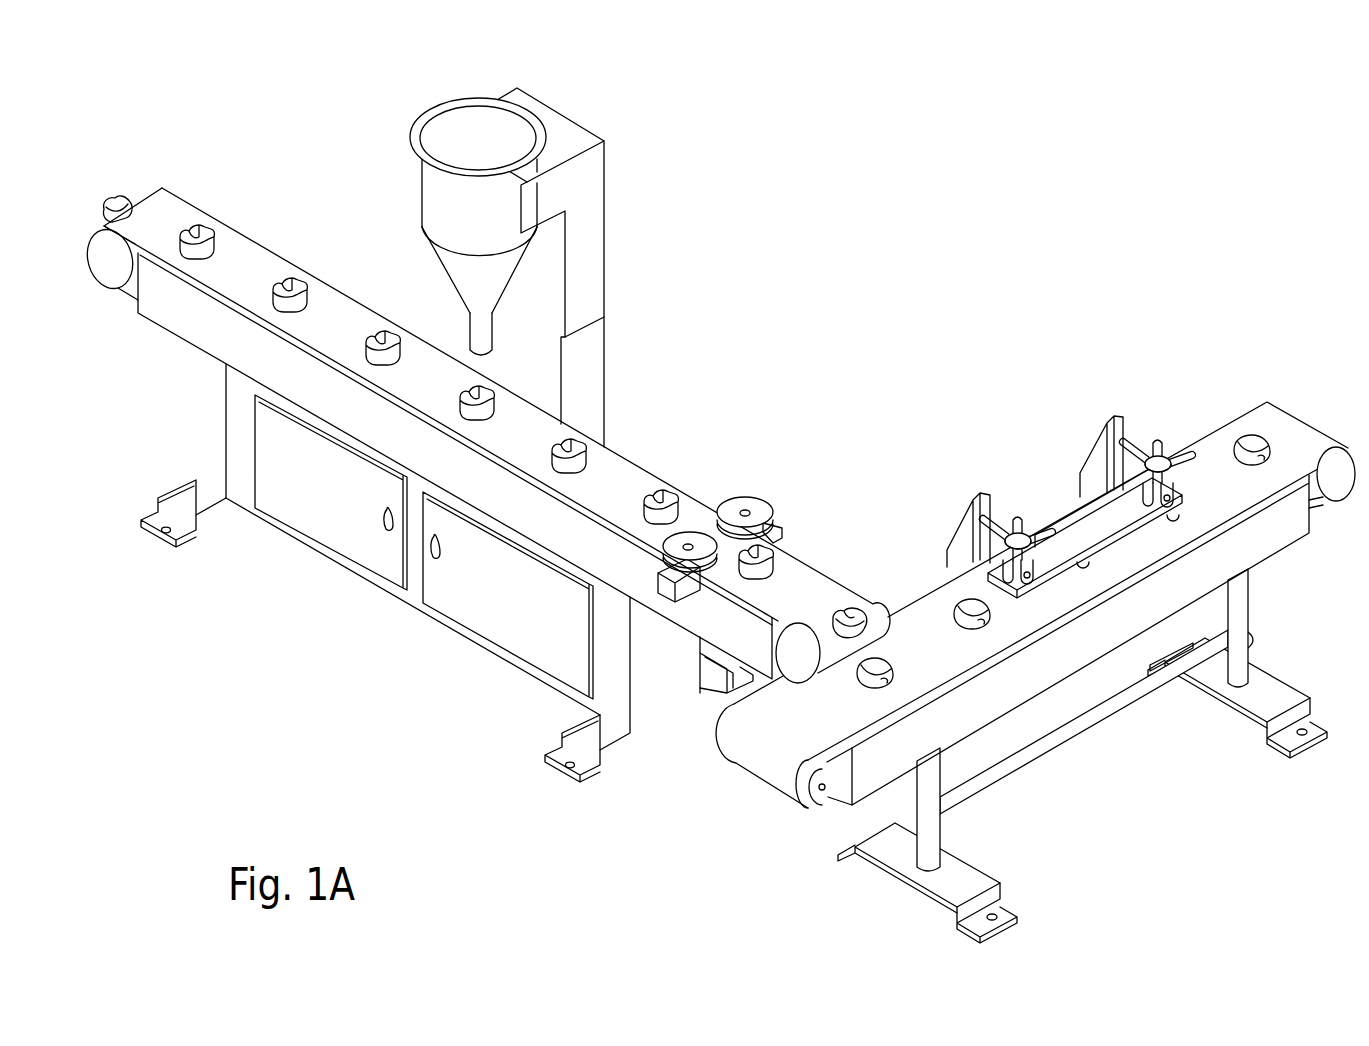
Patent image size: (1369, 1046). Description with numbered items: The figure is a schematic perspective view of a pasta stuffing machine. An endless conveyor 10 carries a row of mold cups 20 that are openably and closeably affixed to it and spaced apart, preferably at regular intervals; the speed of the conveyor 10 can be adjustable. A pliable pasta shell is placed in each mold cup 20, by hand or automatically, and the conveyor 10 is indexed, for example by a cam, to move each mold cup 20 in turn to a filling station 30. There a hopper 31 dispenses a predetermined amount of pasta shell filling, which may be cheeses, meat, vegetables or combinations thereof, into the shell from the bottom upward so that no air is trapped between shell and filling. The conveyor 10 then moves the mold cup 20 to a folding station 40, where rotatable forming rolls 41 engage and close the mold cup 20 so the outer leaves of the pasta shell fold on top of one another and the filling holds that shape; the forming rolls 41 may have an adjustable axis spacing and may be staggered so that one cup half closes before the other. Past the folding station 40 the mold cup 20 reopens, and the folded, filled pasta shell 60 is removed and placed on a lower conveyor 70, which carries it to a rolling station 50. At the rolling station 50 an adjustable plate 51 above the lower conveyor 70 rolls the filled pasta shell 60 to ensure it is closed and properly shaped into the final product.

The endless conveyor 10 is at (193, 212).
The mold cups 20 is at (190, 248).
The filling station 30 is at (458, 236).
The hopper 31 is at (421, 190).
The folding station 40 is at (743, 477).
The rotatable forming rolls 41 is at (688, 531).
The rolling station 50 is at (1150, 486).
The adjustable plate 51 is at (1138, 528).
The folded, filled pasta shell 60 is at (877, 683).
The lower conveyor 70 is at (890, 654).